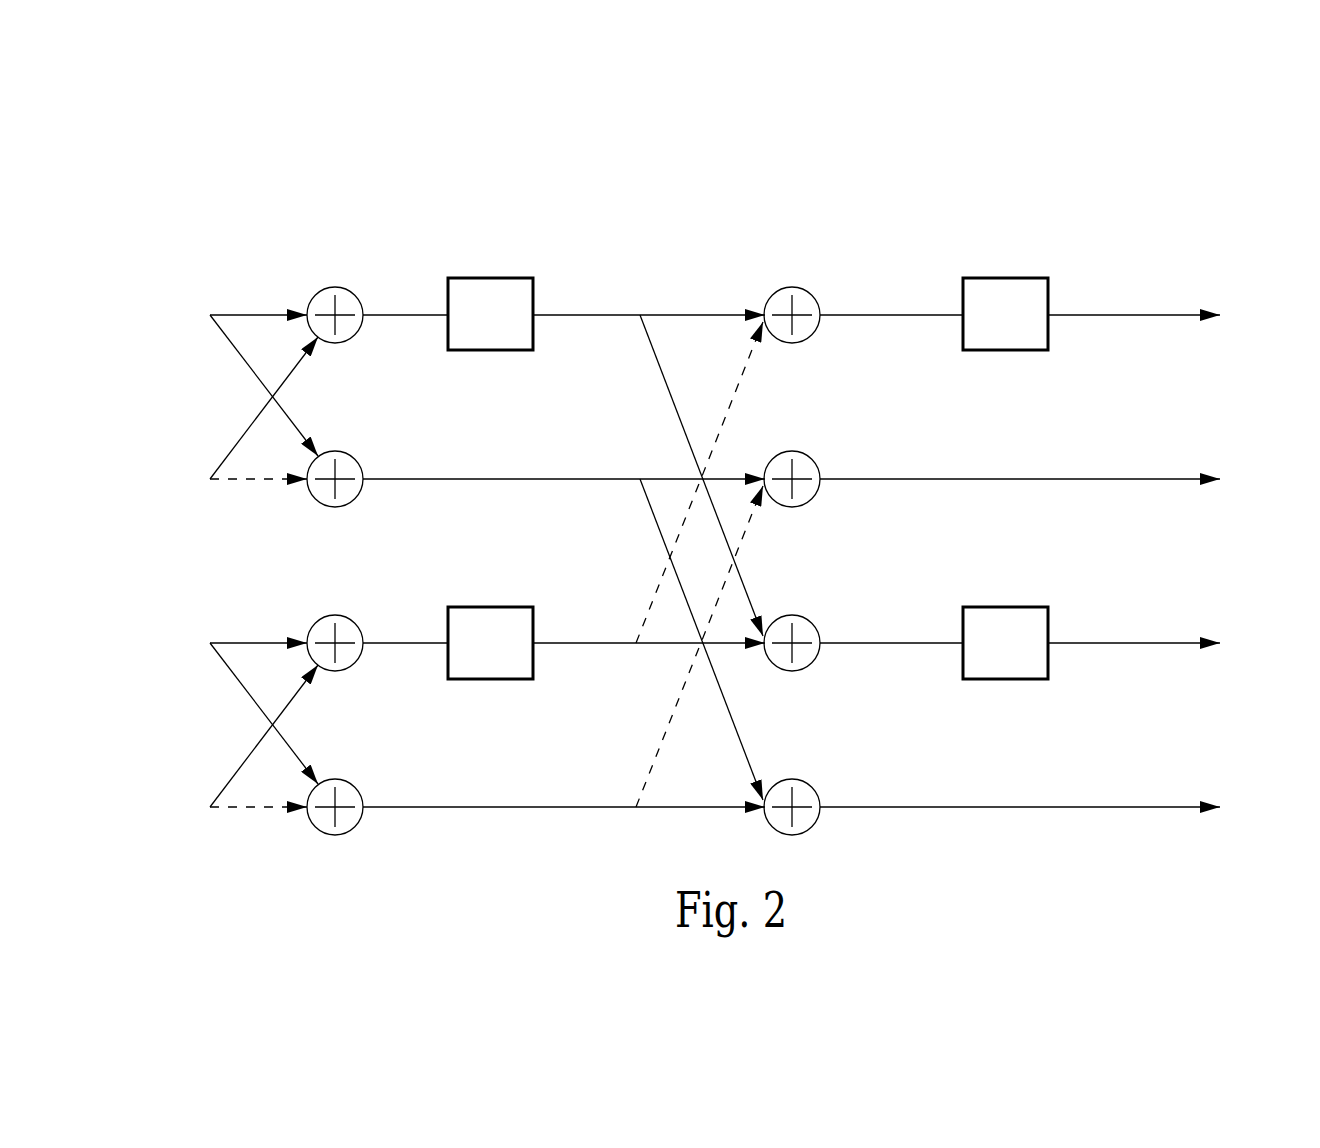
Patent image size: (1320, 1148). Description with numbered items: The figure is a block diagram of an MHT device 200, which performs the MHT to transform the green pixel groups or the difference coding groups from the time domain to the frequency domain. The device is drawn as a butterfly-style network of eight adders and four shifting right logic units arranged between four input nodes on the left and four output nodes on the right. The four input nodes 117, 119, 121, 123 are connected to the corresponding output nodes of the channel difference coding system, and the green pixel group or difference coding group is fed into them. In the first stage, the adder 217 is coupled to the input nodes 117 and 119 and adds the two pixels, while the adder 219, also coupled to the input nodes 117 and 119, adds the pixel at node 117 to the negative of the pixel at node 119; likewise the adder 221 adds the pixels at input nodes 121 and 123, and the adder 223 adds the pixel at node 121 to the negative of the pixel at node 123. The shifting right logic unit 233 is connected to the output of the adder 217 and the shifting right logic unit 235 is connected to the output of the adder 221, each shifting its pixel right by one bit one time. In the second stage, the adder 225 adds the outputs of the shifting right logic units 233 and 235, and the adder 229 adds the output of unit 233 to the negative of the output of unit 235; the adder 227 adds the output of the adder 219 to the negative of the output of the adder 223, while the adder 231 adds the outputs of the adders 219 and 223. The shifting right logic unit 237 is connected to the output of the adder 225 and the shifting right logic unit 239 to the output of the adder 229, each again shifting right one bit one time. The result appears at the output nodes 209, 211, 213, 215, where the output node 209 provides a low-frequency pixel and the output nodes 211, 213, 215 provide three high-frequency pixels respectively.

The MHT device 200 is at (985, 158).
The input node 117 is at (238, 374).
The input node 119 is at (238, 415).
The input node 121 is at (238, 704).
The input node 123 is at (238, 743).
The output node 209 is at (1161, 314).
The output node 211 is at (1047, 477).
The output node 213 is at (1161, 641).
The output node 215 is at (1047, 806).
The adder 217 is at (347, 290).
The adder 219 is at (347, 454).
The adder 221 is at (347, 618).
The adder 223 is at (350, 784).
The adder 225 is at (806, 291).
The adder 227 is at (806, 455).
The adder 229 is at (806, 619).
The adder 231 is at (807, 784).
The shifting right logic unit 233 is at (533, 295).
The shifting right logic unit 235 is at (533, 623).
The shifting right logic unit 237 is at (1048, 297).
The shifting right logic unit 239 is at (1048, 623).